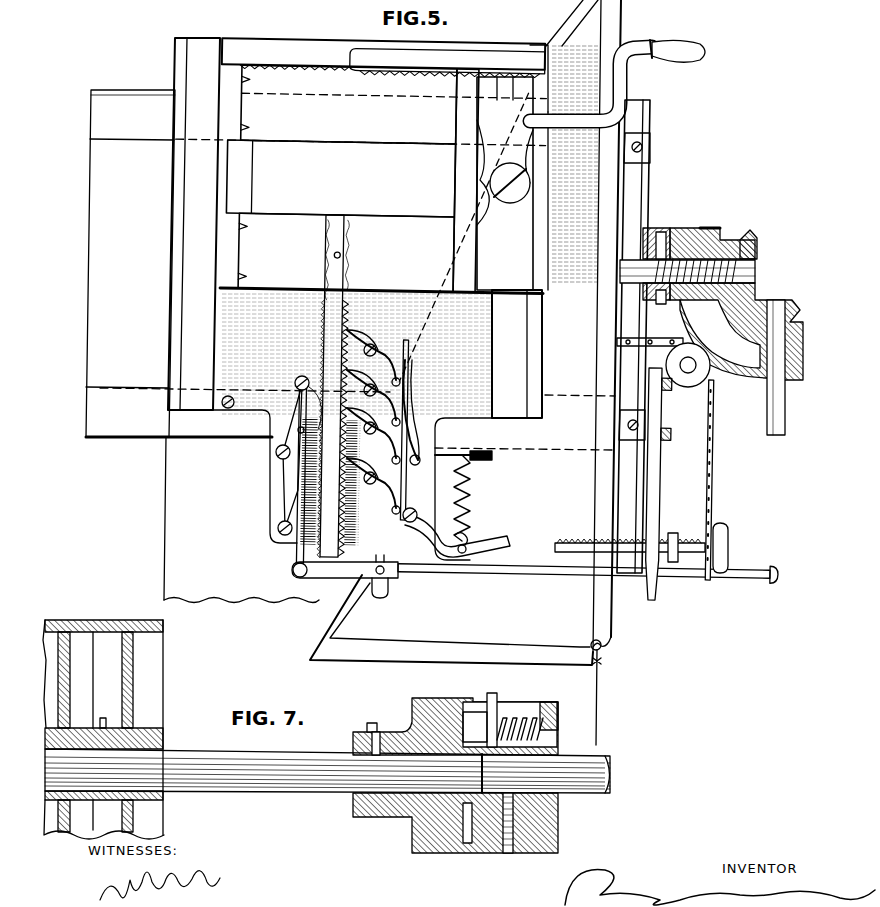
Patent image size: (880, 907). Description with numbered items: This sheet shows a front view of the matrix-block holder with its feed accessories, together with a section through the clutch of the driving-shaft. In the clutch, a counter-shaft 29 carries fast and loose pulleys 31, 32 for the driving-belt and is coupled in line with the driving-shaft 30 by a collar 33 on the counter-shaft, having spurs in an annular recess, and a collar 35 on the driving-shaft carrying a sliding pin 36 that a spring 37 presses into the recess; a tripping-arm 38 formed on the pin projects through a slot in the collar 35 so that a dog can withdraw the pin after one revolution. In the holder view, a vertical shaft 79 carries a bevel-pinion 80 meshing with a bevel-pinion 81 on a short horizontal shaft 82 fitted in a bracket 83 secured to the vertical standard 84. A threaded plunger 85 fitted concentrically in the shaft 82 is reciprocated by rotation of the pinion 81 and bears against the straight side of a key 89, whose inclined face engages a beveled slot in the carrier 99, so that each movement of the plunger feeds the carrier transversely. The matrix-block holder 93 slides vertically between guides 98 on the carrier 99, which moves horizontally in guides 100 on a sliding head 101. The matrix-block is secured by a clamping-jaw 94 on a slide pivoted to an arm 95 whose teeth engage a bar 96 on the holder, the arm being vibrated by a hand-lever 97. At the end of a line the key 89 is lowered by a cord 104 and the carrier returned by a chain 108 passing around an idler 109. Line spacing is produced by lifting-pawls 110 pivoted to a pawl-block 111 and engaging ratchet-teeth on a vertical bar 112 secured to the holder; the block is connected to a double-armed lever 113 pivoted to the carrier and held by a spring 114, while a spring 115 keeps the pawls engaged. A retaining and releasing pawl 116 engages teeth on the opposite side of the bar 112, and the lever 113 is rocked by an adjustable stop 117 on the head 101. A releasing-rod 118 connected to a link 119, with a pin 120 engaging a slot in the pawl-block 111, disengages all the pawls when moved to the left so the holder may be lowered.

In FIG. 7, the counter-shaft 29 is at (327, 780).
In FIG. 7, the driving-shaft 30 is at (546, 786).
In FIG. 7, the fast pulley 31 is at (104, 729).
In FIG. 7, the loose pulley 32 is at (103, 674).
In FIG. 7, the counter-shaft collar 33 is at (455, 786).
In FIG. 7, the driving-shaft collar 35 is at (524, 835).
In FIG. 7, the pin 36 is at (548, 731).
In FIG. 7, the spring 37 is at (512, 716).
In FIG. 7, the tripping-arm 38 is at (510, 709).
In FIG. 5, the vertical shaft 79 is at (791, 367).
In FIG. 5, the bevel-pinion 80 is at (800, 310).
In FIG. 5, the bevel-pinion 81 is at (759, 243).
In FIG. 5, the short horizontal shaft 82 is at (712, 228).
In FIG. 5, the bracket 83 is at (699, 231).
In FIG. 5, the vertical frame or standard 84 is at (241, 520).
In FIG. 5, the plunger 85 is at (687, 271).
In FIG. 5, the key 89 is at (360, 332).
In FIG. 5, the matrix-block holder 93 is at (392, 179).
In FIG. 5, the clamping-jaw 94 is at (463, 225).
In FIG. 5, the arm 95 is at (505, 183).
In FIG. 5, the bar 96 is at (384, 58).
In FIG. 5, the hand-lever 97 is at (617, 73).
In FIG. 5, the guides 98 is at (355, 237).
In FIG. 5, the carrier 99 is at (357, 353).
In FIG. 5, the guides 100 is at (179, 263).
In FIG. 5, the sliding head or frame 101 is at (132, 237).
In FIG. 5, the cord 104 is at (615, 697).
In FIG. 5, the chain 108 is at (727, 480).
In FIG. 5, the idler 109 is at (688, 365).
In FIG. 5, the lifting-pawls 110 is at (373, 416).
In FIG. 5, the pawl-block 111 is at (405, 340).
In FIG. 5, the vertical bar 112 is at (330, 312).
In FIG. 5, the double-armed lever 113 is at (456, 534).
In FIG. 5, the spring 114 is at (473, 496).
In FIG. 5, the spring 115 is at (428, 412).
In FIG. 5, the retaining and releasing pawl 116 is at (292, 422).
In FIG. 5, the adjustable stop 117 is at (641, 545).
In FIG. 5, the releasing-rod 118 is at (588, 582).
In FIG. 5, the link 119 is at (295, 558).
In FIG. 5, the pin 120 is at (385, 576).